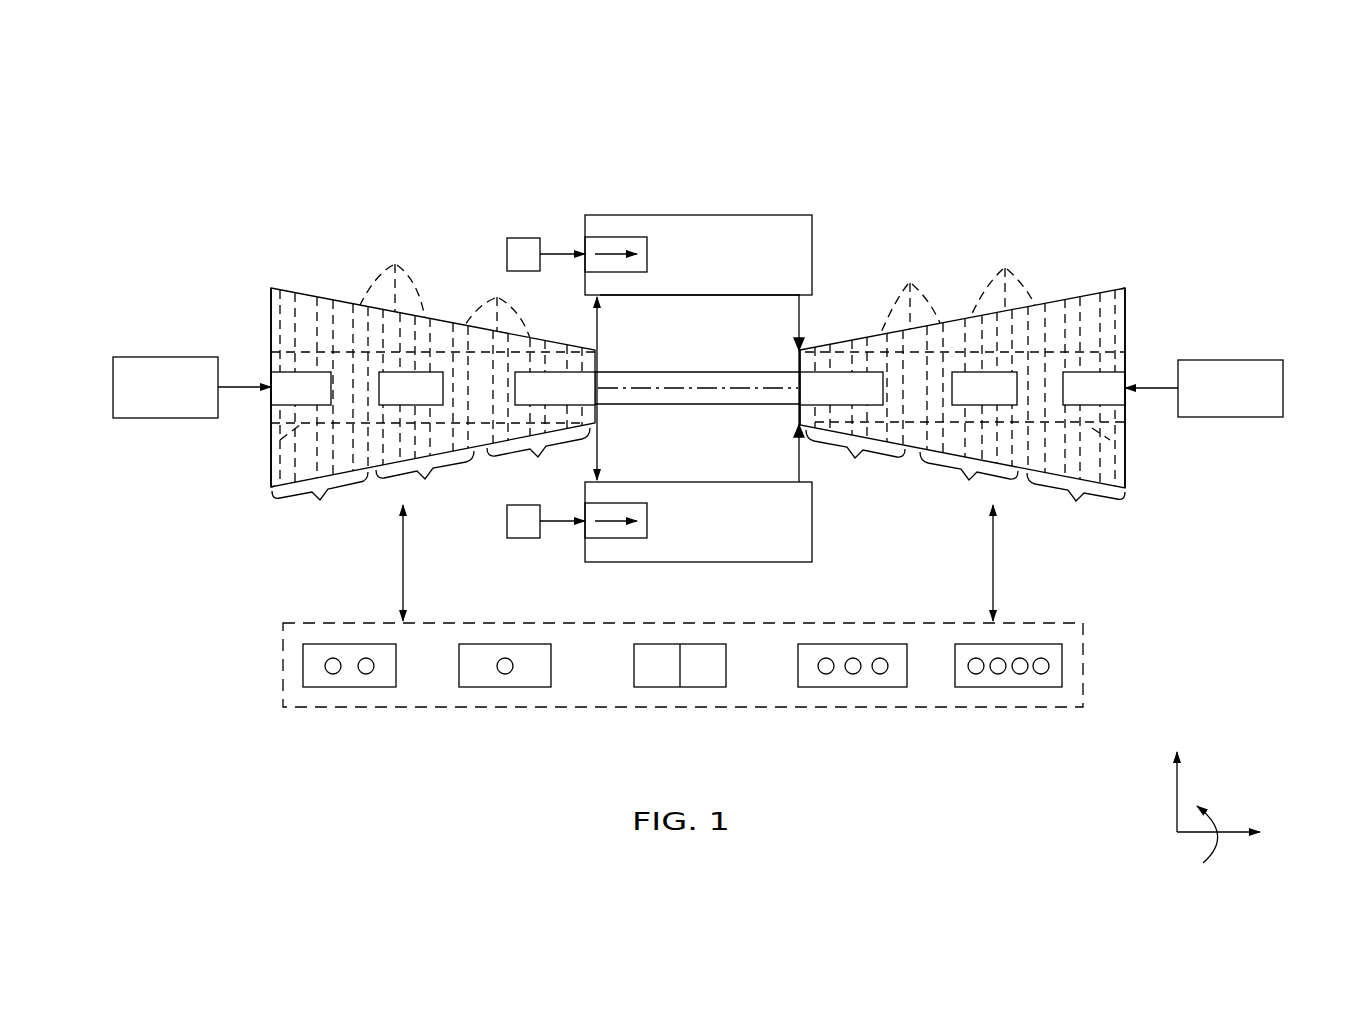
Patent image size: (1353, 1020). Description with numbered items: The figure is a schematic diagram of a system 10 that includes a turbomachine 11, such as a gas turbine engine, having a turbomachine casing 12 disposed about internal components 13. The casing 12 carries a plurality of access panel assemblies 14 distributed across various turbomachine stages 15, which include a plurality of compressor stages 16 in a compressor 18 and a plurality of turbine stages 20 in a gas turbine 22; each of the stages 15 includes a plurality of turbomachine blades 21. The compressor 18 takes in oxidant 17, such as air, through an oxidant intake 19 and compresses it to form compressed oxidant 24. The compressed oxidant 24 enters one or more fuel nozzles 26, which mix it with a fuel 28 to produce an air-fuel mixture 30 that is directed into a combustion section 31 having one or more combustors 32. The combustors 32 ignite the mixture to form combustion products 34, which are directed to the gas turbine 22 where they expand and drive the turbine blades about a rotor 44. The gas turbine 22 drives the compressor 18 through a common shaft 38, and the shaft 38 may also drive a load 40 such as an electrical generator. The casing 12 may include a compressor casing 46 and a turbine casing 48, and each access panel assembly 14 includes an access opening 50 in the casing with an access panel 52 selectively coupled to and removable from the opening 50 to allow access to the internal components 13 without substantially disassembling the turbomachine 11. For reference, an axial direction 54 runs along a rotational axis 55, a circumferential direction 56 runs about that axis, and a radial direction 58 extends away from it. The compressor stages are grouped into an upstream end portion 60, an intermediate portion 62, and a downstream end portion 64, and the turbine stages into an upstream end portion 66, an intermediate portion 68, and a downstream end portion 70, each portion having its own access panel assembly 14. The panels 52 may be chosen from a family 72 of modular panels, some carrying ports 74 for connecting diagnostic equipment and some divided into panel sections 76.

The system 10 is at (340, 135).
The turbomachine 11 is at (828, 150).
The turbomachine casing 12 is at (290, 290).
The internal components 13 is at (250, 305).
The access panel assembly 14 is at (303, 367).
The turbomachine stages 15 is at (340, 275).
The compressor stages 16 is at (445, 287).
The oxidant 17 is at (240, 380).
The compressor 18 is at (440, 197).
The oxidant intake 19 is at (113, 392).
The turbine stages 20 is at (957, 287).
The turbomachine blades 21 is at (270, 470).
The gas turbine 22 is at (1025, 192).
The compressed oxidant 24 is at (598, 330).
The fuel nozzle 26 is at (585, 245).
The fuel 28 is at (525, 238).
The air-fuel mixture 30 is at (612, 252).
The combustion section 31 is at (710, 180).
The combustor 32 is at (660, 215).
The combustion products 34 is at (798, 345).
The common shaft 38 is at (658, 400).
The load 40 is at (1283, 386).
The rotor 44 is at (285, 433).
The compressor casing 46 is at (271, 487).
The turbine casing 48 is at (1125, 290).
The access opening 50 is at (1125, 378).
The access panel 52 is at (1095, 380).
The axial direction 54 is at (1190, 835).
The rotational axis 55 is at (658, 385).
The circumferential direction 56 is at (1212, 812).
The radial direction 58 is at (1177, 800).
The upstream end portion 60 is at (320, 503).
The intermediate portion 62 is at (425, 481).
The downstream end portion 64 is at (538, 458).
The upstream end portion 66 is at (855, 461).
The intermediate portion 68 is at (969, 482).
The downstream end portion 70 is at (1076, 503).
The family of modular panels 72 is at (1085, 670).
The ports 74 is at (366, 657).
The panel sections 76 is at (705, 687).